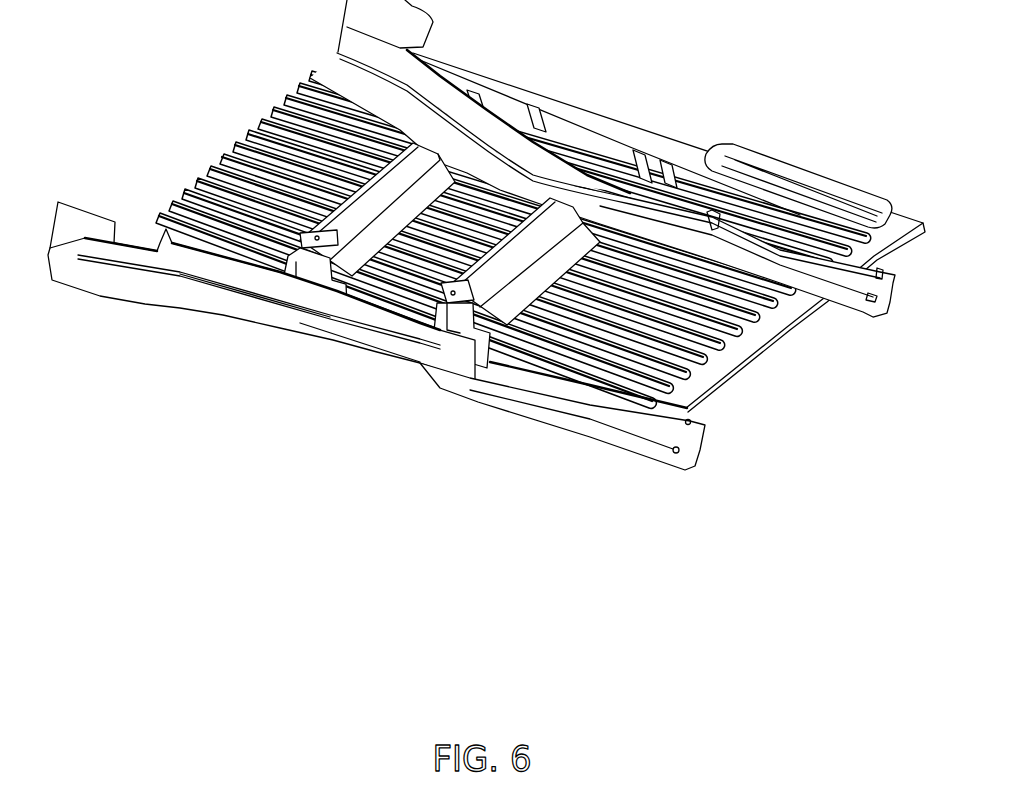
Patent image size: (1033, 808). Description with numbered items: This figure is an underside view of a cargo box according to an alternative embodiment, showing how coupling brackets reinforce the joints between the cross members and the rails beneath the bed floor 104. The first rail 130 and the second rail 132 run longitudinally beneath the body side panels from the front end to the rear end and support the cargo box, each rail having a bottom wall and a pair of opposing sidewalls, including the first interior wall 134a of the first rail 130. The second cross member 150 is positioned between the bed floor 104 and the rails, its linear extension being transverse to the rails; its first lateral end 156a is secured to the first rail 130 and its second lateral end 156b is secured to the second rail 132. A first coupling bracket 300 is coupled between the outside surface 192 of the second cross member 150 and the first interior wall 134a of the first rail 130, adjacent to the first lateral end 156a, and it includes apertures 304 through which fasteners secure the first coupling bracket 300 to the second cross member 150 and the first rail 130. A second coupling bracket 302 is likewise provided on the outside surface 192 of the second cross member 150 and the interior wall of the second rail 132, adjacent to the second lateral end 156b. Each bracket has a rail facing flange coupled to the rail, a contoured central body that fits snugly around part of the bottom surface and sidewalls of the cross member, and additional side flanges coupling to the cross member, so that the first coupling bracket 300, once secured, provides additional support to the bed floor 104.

The bed floor 104 is at (720, 293).
The first rail 130 is at (225, 300).
The second rail 132 is at (672, 218).
The first interior wall 134a is at (353, 320).
The second cross member 150 is at (542, 270).
The first lateral end 156a is at (418, 327).
The second lateral end 156b is at (643, 150).
The outside surface 192 is at (427, 317).
The first coupling bracket 300 is at (460, 347).
The second coupling bracket 302 is at (602, 217).
The apertures 304 is at (453, 340).